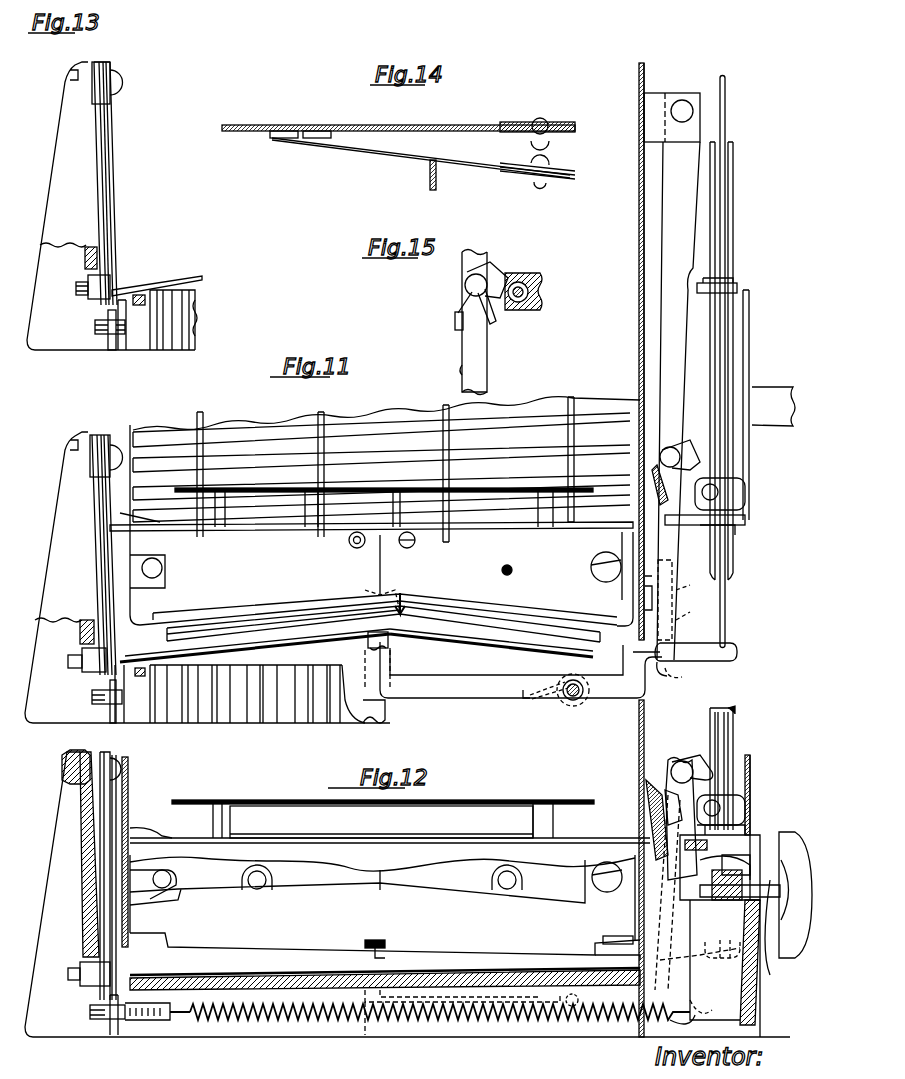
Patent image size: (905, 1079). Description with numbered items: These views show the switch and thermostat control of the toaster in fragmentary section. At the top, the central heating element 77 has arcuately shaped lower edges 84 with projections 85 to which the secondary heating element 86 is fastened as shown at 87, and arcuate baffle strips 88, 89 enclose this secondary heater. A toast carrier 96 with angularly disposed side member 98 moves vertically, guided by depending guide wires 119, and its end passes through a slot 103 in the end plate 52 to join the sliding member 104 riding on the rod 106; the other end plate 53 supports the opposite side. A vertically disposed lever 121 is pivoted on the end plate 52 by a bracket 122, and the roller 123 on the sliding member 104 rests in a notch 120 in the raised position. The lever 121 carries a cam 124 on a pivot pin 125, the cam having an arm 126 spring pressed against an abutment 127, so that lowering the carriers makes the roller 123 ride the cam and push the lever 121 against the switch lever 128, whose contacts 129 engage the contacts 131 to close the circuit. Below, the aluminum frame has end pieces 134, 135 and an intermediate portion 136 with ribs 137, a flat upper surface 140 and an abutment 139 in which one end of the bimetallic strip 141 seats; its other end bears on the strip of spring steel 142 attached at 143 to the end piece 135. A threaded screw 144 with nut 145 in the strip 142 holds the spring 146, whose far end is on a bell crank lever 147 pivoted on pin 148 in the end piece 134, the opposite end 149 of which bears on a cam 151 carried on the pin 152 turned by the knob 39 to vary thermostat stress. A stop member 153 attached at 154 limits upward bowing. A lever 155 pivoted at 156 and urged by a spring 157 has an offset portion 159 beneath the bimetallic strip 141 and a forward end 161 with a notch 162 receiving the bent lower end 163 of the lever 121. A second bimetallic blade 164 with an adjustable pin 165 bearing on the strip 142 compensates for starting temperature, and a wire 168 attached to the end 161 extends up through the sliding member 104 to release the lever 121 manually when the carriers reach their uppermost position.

In FIG. 12, the knob 39 is at (800, 958).
In FIG. 11, the end plate 52 is at (638, 80).
In FIG. 12, the end plate 52 is at (638, 782).
In FIG. 12, the end plate 53 is at (130, 778).
In FIG. 11, the central heating element 77 is at (232, 427).
In FIG. 12, the central heating element 77 is at (350, 863).
In FIG. 11, the arcuate lower edge 84 is at (542, 610).
In FIG. 11, the projections 85 is at (375, 598).
In FIG. 11, the secondary heating element 86 is at (465, 600).
In FIG. 11, the fastening 87 is at (165, 565).
In FIG. 11, the arcuate baffle strip 88 is at (491, 579).
In FIG. 12, the arcuate baffle strip 88 is at (385, 905).
In FIG. 11, the arcuate baffle strip 89 is at (505, 603).
In FIG. 11, the toast carrier 96 is at (305, 538).
In FIG. 12, the toast carrier 96 is at (455, 832).
In FIG. 11, the side member 98 is at (220, 540).
In FIG. 12, the side member 98 is at (390, 818).
In FIG. 11, the slot 103 is at (638, 335).
In FIG. 11, the sliding member 104 is at (755, 310).
In FIG. 12, the sliding member 104 is at (752, 770).
In FIG. 11, the rod 106 is at (735, 178).
In FIG. 12, the rod 106 is at (733, 705).
In FIG. 11, the guide wire 119 is at (420, 400).
In FIG. 11, the notch 120 is at (737, 270).
In FIG. 14, the vertically disposed lever 121 is at (428, 185).
In FIG. 15, the vertically disposed lever 121 is at (480, 253).
In FIG. 11, the vertically disposed lever 121 is at (678, 401).
In FIG. 12, the vertically disposed lever 121 is at (676, 852).
In FIG. 11, the bracket 122 is at (655, 102).
In FIG. 15, the roller 123 is at (530, 280).
In FIG. 15, the cam 124 is at (500, 270).
In FIG. 11, the cam 124 is at (692, 452).
In FIG. 12, the cam 124 is at (700, 768).
In FIG. 15, the pivot pin 125 is at (465, 276).
In FIG. 11, the pivot pin 125 is at (670, 447).
In FIG. 15, the arm 126 is at (490, 326).
In FIG. 15, the abutment 127 is at (455, 319).
In FIG. 14, the switch lever 128 is at (378, 160).
In FIG. 11, the switch lever 128 is at (650, 467).
In FIG. 12, the switch lever 128 is at (650, 812).
In FIG. 14, the contacts 129 is at (550, 168).
In FIG. 11, the contacts 129 is at (687, 600).
In FIG. 14, the contacts 131 is at (560, 130).
In FIG. 11, the contacts 131 is at (645, 592).
In FIG. 12, the contacts 131 is at (607, 877).
In FIG. 12, the end piece 134 is at (757, 1018).
In FIG. 13, the end piece 135 is at (111, 206).
In FIG. 11, the end piece 135 is at (71, 577).
In FIG. 12, the end piece 135 is at (407, 893).
In FIG. 13, the intermediate portion 136 is at (195, 328).
In FIG. 11, the intermediate portion 136 is at (258, 715).
In FIG. 11, the ribs 137 is at (305, 715).
In FIG. 12, the abutment 139 is at (596, 962).
In FIG. 11, the flat upper surface 140 is at (275, 663).
In FIG. 12, the flat upper surface 140 is at (265, 965).
In FIG. 13, the bimetallic strip 141 is at (188, 282).
In FIG. 11, the bimetallic strip 141 is at (470, 650).
In FIG. 12, the bimetallic strip 141 is at (470, 975).
In FIG. 13, the strip of spring steel 142 is at (125, 185).
In FIG. 11, the strip of spring steel 142 is at (100, 577).
In FIG. 12, the strip of spring steel 142 is at (95, 870).
In FIG. 13, the screw attachment 143 is at (117, 80).
In FIG. 11, the screw attachment 143 is at (116, 438).
In FIG. 13, the threaded screw 144 is at (128, 352).
In FIG. 11, the threaded screw 144 is at (126, 723).
In FIG. 12, the threaded screw 144 is at (127, 1020).
In FIG. 13, the nut 145 is at (112, 335).
In FIG. 11, the nut 145 is at (105, 700).
In FIG. 12, the nut 145 is at (95, 1015).
In FIG. 12, the spring 146 is at (270, 1030).
In FIG. 12, the bell crank lever 147 is at (695, 1030).
In FIG. 12, the pivot pin 148 is at (625, 918).
In FIG. 12, the end of bell crank lever 149 is at (740, 850).
In FIG. 12, the cam 151 is at (770, 870).
In FIG. 14, the pin 152 is at (392, 128).
In FIG. 12, the pin 152 is at (776, 934).
In FIG. 11, the stop member 153 is at (388, 642).
In FIG. 12, the stop member 153 is at (385, 958).
In FIG. 11, the attachment point 154 is at (370, 722).
In FIG. 11, the lever 155 is at (490, 698).
In FIG. 12, the lever 155 is at (475, 1030).
In FIG. 11, the pivot 156 is at (580, 705).
In FIG. 12, the pivot 156 is at (565, 1030).
In FIG. 11, the spring 157 is at (525, 702).
In FIG. 11, the offset portion 159 is at (385, 668).
In FIG. 12, the offset portion 159 is at (365, 972).
In FIG. 11, the forward end of lever 161 is at (740, 660).
In FIG. 12, the forward end of lever 161 is at (730, 962).
In FIG. 11, the notch 162 is at (694, 677).
In FIG. 12, the notch 162 is at (694, 976).
In FIG. 11, the bent lower end 163 is at (674, 682).
In FIG. 12, the bent lower end 163 is at (715, 1010).
In FIG. 13, the second bimetallic blade 164 is at (110, 212).
In FIG. 11, the second bimetallic blade 164 is at (100, 548).
In FIG. 12, the second bimetallic blade 164 is at (100, 910).
In FIG. 13, the adjustable pin 165 is at (90, 298).
In FIG. 11, the adjustable pin 165 is at (85, 672).
In FIG. 12, the adjustable pin 165 is at (88, 985).
In FIG. 11, the wire 168 is at (728, 108).
In FIG. 12, the wire 168 is at (727, 735).